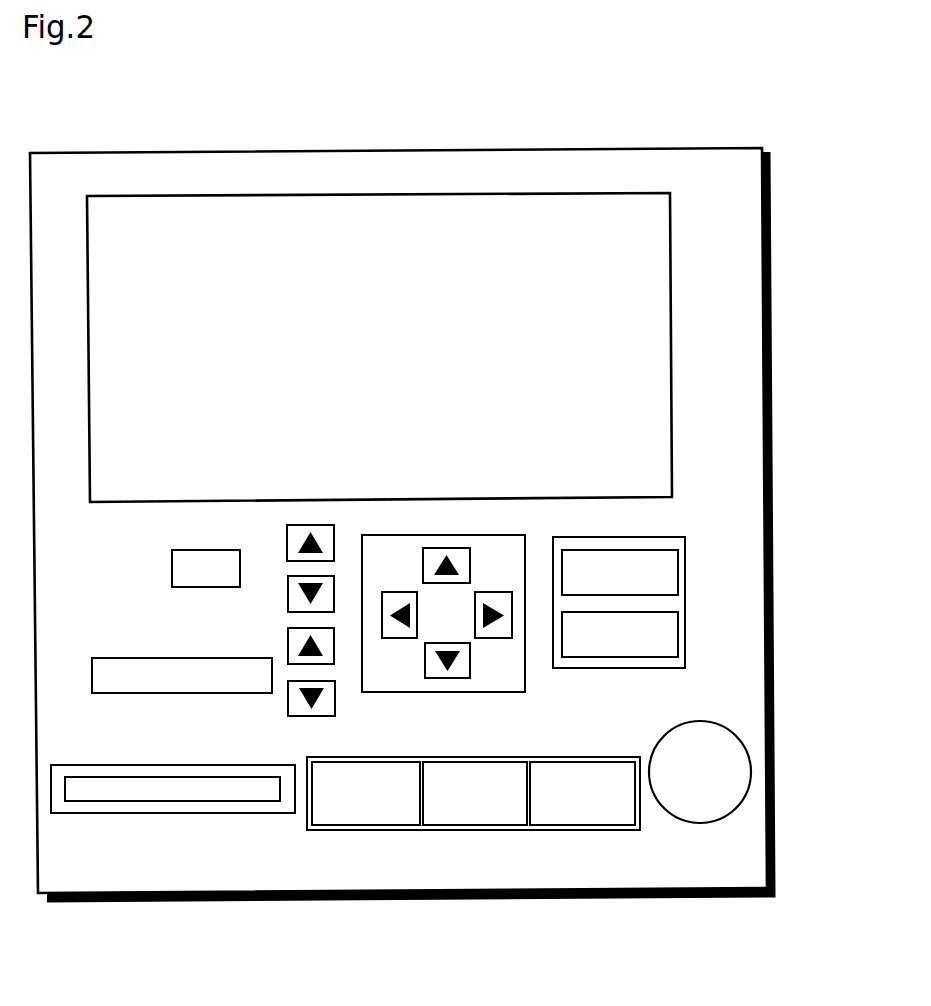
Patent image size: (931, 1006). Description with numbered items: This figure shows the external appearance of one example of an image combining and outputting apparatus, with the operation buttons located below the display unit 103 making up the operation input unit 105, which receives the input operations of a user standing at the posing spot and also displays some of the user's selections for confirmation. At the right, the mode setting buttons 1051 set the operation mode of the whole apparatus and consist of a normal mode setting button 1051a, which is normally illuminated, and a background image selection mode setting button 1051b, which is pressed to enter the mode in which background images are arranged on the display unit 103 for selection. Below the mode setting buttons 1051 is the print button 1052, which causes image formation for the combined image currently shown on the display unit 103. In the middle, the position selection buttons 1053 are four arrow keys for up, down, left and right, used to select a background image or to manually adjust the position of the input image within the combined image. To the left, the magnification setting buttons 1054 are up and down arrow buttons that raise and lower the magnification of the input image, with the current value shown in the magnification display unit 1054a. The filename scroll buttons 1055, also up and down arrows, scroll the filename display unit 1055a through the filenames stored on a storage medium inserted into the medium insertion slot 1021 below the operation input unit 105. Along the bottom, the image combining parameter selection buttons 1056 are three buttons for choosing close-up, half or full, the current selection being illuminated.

The display unit 103 is at (508, 195).
The operation input unit 105 is at (714, 497).
The medium insertion slot 1021 is at (143, 802).
The mode setting buttons 1051 is at (718, 631).
The normal mode setting button 1051a is at (678, 570).
The background image selection mode setting button 1051b is at (678, 623).
The print button 1052 is at (698, 823).
The position selection buttons 1053 is at (452, 507).
The magnification setting buttons 1054 is at (305, 515).
The magnification display unit 1054a is at (222, 550).
The filename scroll buttons 1055 is at (351, 705).
The filename display unit 1055a is at (183, 693).
The image combining parameter selection buttons 1056 is at (477, 830).